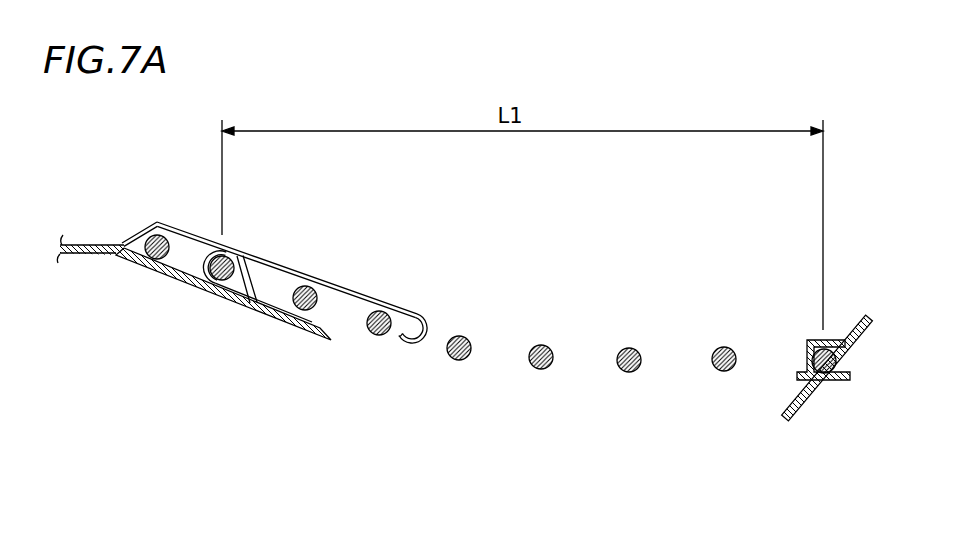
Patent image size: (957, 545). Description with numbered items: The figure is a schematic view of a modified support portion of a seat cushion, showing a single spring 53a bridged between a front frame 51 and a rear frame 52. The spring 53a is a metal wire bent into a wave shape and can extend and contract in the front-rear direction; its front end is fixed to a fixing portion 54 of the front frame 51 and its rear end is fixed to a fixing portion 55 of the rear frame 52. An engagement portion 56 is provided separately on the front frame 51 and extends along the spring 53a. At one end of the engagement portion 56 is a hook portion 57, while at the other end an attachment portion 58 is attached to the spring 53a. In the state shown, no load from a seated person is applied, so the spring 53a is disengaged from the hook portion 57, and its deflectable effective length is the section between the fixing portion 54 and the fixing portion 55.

The front frame 51 is at (80, 244).
The rear frame 52 is at (827, 383).
The spring 53a is at (623, 350).
The fixing portion 54 is at (274, 273).
The fixing portion 55 is at (812, 335).
The engagement portion 56 is at (340, 293).
The hook portion 57 is at (415, 350).
The attachment portion 58 is at (190, 280).